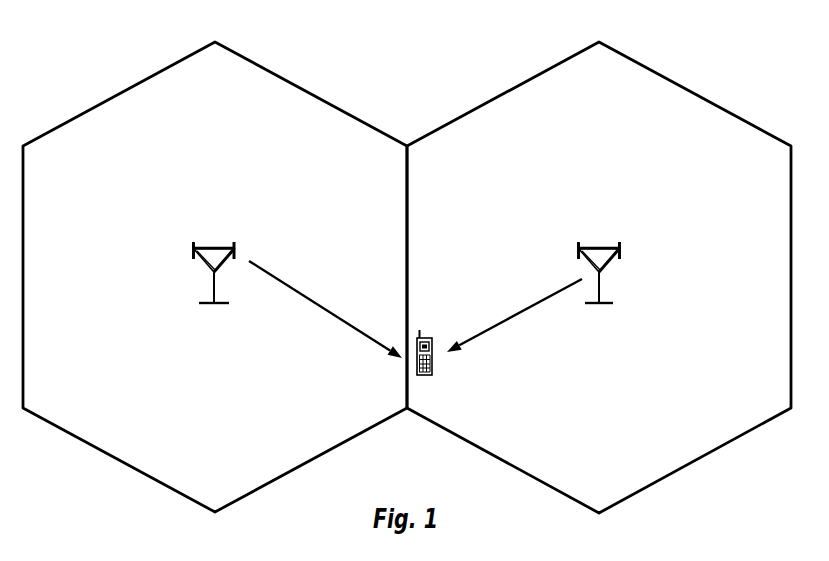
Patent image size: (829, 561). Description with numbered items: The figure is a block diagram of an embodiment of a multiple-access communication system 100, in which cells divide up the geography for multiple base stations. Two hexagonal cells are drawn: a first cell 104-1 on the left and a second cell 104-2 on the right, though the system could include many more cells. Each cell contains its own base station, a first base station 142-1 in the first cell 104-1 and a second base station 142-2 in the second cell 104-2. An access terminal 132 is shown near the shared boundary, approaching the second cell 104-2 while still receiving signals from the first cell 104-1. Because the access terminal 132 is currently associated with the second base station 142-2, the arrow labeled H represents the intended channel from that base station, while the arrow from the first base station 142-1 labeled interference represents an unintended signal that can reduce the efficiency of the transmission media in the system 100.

The multiple-access communication system 100 is at (754, 50).
The first cell 104-1 is at (235, 463).
The second cell 104-2 is at (623, 460).
The first base station 142-1 is at (212, 243).
The second base station 142-2 is at (597, 243).
The access terminal 132 is at (426, 334).